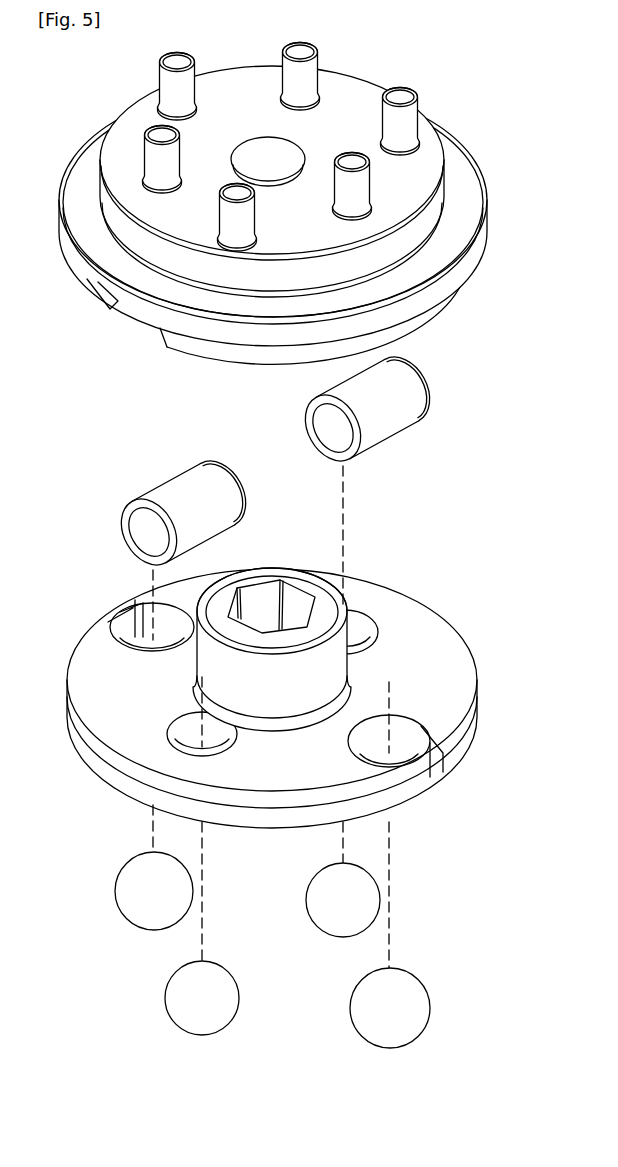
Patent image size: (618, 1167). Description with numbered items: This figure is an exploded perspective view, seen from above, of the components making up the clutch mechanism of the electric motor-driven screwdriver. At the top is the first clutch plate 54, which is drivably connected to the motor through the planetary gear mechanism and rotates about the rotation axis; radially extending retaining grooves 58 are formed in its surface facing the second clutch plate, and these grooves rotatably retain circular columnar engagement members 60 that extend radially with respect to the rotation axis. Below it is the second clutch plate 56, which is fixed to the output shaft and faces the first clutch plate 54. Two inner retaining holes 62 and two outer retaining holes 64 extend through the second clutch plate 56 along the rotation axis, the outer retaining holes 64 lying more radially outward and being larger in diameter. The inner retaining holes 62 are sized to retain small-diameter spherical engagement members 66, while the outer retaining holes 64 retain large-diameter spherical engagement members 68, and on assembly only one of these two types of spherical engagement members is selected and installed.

The first clutch plate 54 is at (398, 187).
The second clutch plate 56 is at (304, 724).
The retaining grooves 58 is at (120, 310).
The circular columnar engagement members 60 is at (210, 518).
The inner retaining holes 62 is at (358, 633).
The outer retaining holes 64 is at (170, 620).
The small-diameter spherical engagement members 66 is at (362, 893).
The large-diameter spherical engagement members 68 is at (148, 907).